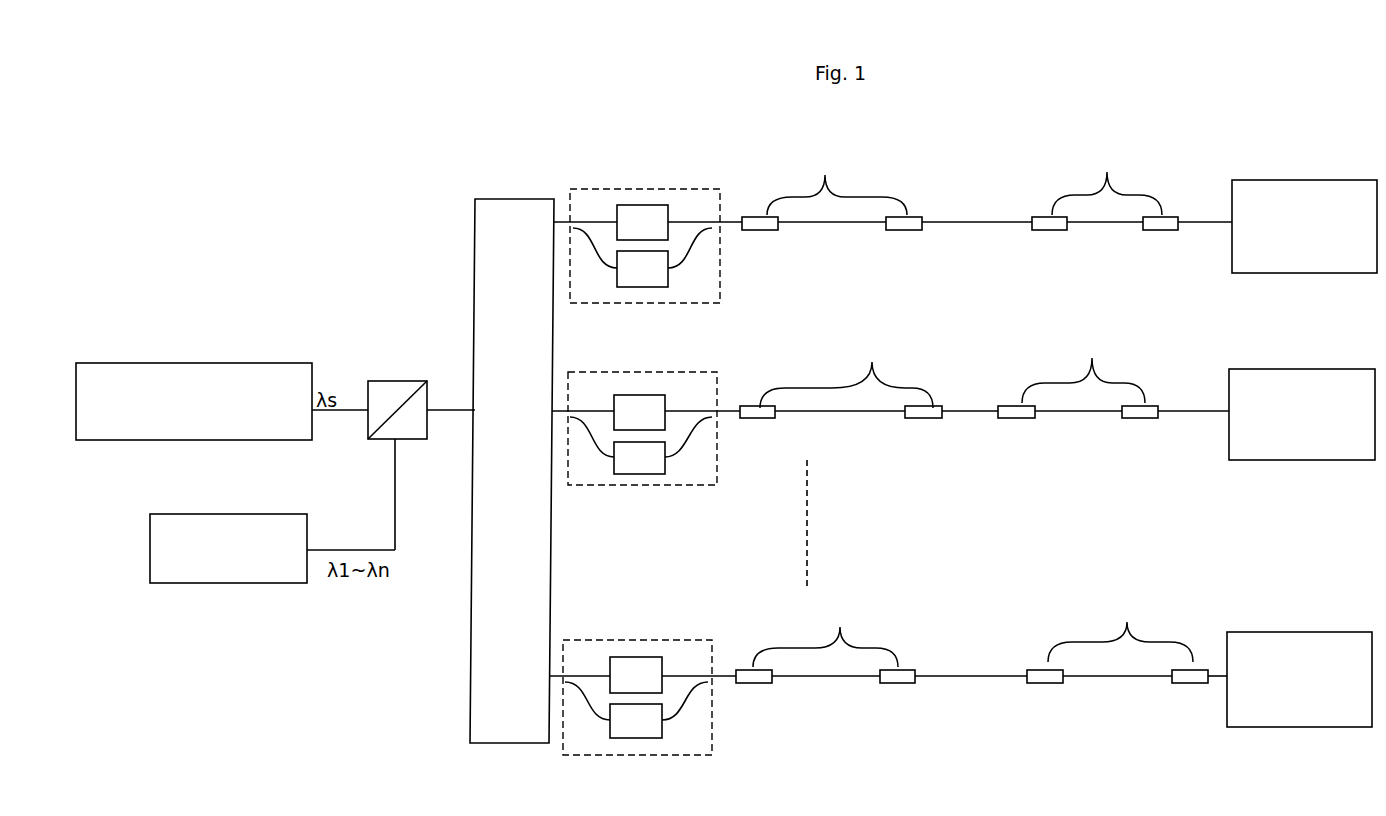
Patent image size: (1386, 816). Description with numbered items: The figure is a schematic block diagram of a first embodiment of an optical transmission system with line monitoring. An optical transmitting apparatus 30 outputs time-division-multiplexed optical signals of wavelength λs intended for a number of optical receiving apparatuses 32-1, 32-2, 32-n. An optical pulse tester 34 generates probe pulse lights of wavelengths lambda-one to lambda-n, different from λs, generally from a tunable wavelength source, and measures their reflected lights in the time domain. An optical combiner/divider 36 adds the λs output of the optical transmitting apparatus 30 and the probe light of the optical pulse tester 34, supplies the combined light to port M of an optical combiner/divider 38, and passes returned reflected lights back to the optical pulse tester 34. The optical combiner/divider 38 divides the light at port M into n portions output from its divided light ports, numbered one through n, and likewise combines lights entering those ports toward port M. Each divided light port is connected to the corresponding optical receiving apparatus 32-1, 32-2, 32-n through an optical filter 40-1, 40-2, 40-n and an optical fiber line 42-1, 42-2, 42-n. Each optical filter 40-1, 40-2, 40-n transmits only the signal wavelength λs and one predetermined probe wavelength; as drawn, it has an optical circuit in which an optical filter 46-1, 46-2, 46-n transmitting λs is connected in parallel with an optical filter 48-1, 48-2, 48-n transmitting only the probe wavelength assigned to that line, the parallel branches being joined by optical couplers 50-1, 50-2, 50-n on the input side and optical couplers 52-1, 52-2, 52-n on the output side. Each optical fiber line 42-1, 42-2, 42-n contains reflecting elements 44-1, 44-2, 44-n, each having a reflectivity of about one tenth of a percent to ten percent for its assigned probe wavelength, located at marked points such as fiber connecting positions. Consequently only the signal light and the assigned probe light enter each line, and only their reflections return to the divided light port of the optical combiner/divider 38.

The optical transmitting apparatus 30 is at (216, 366).
The optical receiving apparatus 32-1 is at (1313, 192).
The optical receiving apparatus 32-2 is at (1308, 382).
The optical receiving apparatus 32-n is at (1325, 650).
The optical pulse tester 34 is at (230, 583).
The optical combiner/divider 36 is at (388, 389).
The optical combiner/divider 38 is at (507, 210).
The optical filter 40-1 is at (717, 203).
The optical filter 40-2 is at (708, 393).
The optical filter 40-n is at (702, 648).
The optical fiber line 42-1 is at (992, 220).
The optical fiber line 42-2 is at (977, 410).
The optical fiber line 42-n is at (975, 677).
The reflecting elements 44-1 is at (960, 198).
The reflecting elements 44-2 is at (949, 388).
The reflecting elements 44-n is at (972, 651).
The optical filter 46-1 is at (637, 206).
The optical filter 46-2 is at (648, 395).
The optical filter 46-n is at (637, 658).
The optical filter 48-1 is at (657, 280).
The optical filter 48-2 is at (637, 474).
The optical filter 48-n is at (650, 734).
The optical coupler 50-1 is at (583, 243).
The optical coupler 50-2 is at (582, 435).
The optical coupler 50-n is at (577, 695).
The optical coupler 52-1 is at (703, 235).
The optical coupler 52-2 is at (700, 430).
The optical coupler 52-n is at (697, 693).